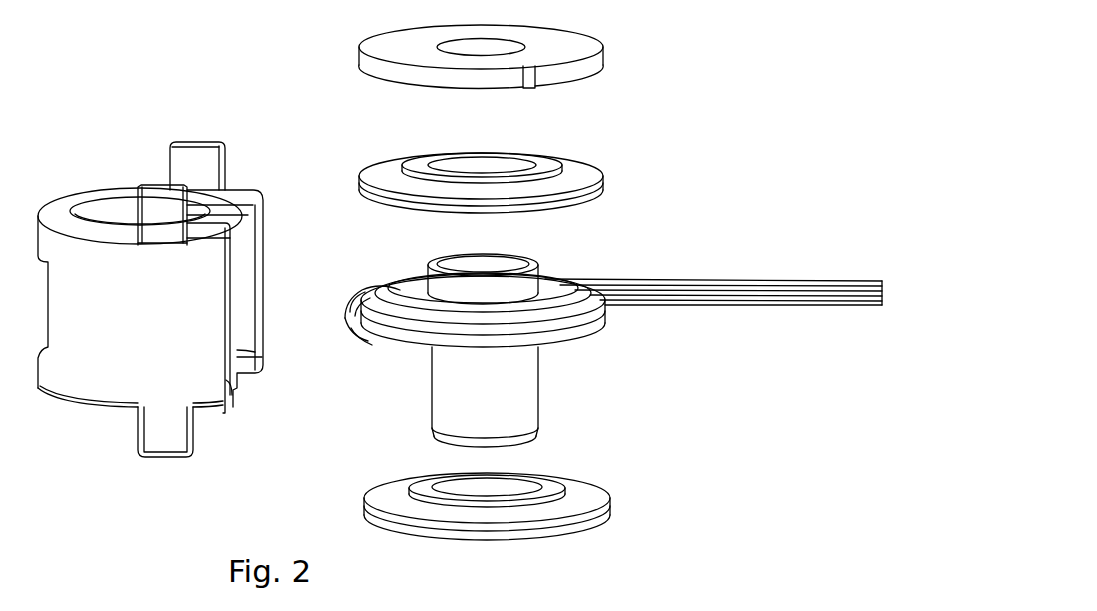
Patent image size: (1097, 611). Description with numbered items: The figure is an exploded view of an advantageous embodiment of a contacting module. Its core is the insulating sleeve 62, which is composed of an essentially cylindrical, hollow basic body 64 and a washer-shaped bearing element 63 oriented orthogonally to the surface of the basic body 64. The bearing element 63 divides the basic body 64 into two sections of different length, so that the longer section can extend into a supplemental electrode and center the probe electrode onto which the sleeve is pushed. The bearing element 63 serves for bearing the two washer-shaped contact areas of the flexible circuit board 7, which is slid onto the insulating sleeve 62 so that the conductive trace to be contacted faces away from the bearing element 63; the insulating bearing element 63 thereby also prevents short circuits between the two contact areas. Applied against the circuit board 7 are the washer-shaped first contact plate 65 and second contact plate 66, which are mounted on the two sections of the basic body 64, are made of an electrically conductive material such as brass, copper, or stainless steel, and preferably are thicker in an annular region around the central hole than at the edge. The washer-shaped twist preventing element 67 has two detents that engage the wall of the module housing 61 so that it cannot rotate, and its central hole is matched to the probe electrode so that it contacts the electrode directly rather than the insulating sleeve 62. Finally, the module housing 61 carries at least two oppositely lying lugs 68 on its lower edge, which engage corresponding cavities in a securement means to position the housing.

The flexible circuit board 7 is at (750, 293).
The module housing 61 is at (97, 395).
The insulating sleeve 62 is at (499, 360).
The bearing element 63 is at (600, 322).
The basic body 64 is at (522, 392).
The first contact plate 65 is at (593, 183).
The second contact plate 66 is at (588, 492).
The twist preventing element 67 is at (597, 62).
The lugs 68 is at (157, 202).